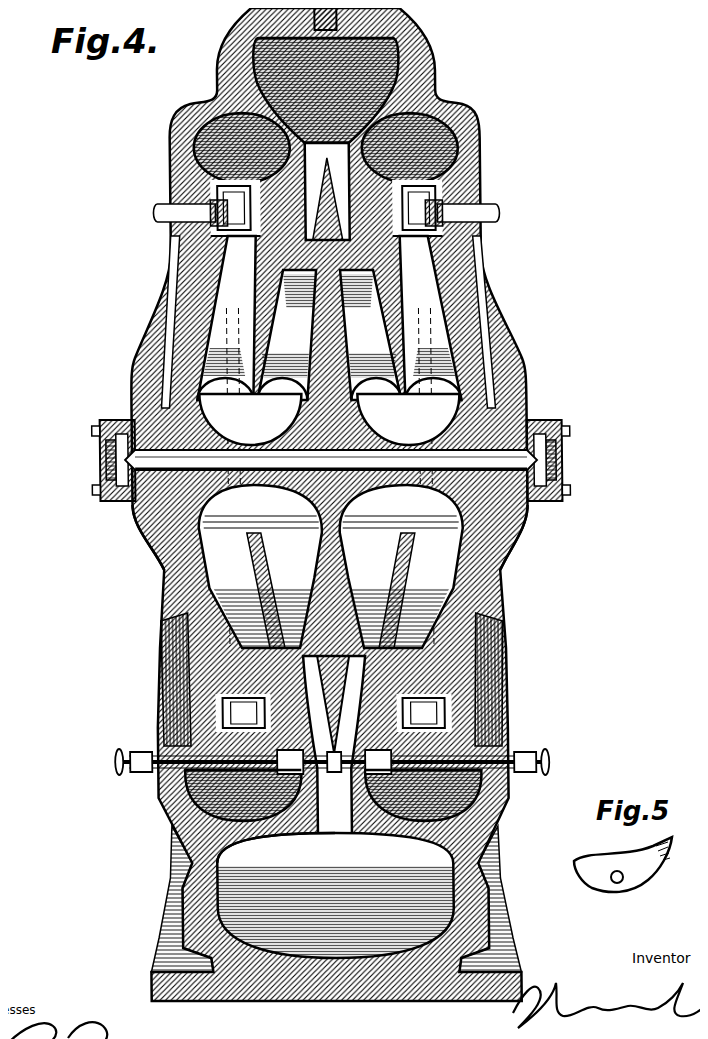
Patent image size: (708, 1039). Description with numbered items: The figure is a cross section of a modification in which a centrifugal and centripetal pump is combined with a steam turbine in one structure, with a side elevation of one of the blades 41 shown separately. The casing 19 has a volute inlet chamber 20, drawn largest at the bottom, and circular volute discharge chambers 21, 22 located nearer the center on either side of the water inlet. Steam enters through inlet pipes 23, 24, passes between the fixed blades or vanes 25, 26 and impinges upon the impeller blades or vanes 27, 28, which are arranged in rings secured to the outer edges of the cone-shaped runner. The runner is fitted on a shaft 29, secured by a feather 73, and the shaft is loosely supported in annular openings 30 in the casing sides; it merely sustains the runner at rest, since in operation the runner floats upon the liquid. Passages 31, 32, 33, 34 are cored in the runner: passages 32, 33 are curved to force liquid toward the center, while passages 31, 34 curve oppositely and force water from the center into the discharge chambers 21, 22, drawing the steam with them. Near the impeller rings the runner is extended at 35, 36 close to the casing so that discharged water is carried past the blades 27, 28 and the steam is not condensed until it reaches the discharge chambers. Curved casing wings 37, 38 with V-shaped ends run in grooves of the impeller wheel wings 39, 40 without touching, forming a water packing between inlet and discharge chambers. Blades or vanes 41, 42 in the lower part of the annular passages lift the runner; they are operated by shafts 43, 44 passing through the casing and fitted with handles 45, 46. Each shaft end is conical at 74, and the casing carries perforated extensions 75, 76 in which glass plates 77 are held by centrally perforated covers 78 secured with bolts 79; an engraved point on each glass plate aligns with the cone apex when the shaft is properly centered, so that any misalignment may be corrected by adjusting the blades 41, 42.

In FIG. 4, the casing 19 is at (503, 556).
In FIG. 4, the inlet chamber 20 is at (335, 895).
In FIG. 4, the volute discharge chamber 21 is at (212, 100).
In FIG. 4, the volute discharge chamber 22 is at (418, 128).
In FIG. 4, the inlet pipe 23 is at (200, 190).
In FIG. 4, the inlet pipe 24 is at (468, 205).
In FIG. 4, the fixed blade 25 is at (213, 210).
In FIG. 4, the fixed blade 26 is at (444, 192).
In FIG. 4, the impeller blade 27 is at (205, 182).
In FIG. 4, the impeller blade 28 is at (446, 165).
In FIG. 4, the shaft 29 is at (366, 440).
In FIG. 4, the annular opening 30 is at (148, 506).
In FIG. 4, the passage 31 is at (228, 442).
In FIG. 4, the passage 32 is at (286, 335).
In FIG. 4, the passage 33 is at (370, 335).
In FIG. 4, the passage 34 is at (432, 442).
In FIG. 4, the runner extension 35 is at (238, 226).
In FIG. 4, the runner extension 36 is at (437, 222).
In FIG. 4, the curved wing 37 is at (288, 835).
In FIG. 4, the curved wing 38 is at (326, 738).
In FIG. 4, the impeller wheel wing 39 is at (215, 702).
In FIG. 4, the impeller wheel wing 40 is at (430, 702).
In FIG. 4, the blade 41 is at (333, 783).
In FIG. 5, the blade 41 is at (650, 852).
In FIG. 4, the blade 42 is at (335, 746).
In FIG. 4, the shaft 43 is at (190, 740).
In FIG. 4, the shaft 44 is at (456, 740).
In FIG. 4, the handle 45 is at (104, 752).
In FIG. 4, the handle 46 is at (538, 752).
In FIG. 4, the feather 73 is at (252, 440).
In FIG. 4, the conical shaft end 74 is at (108, 455).
In FIG. 4, the perforated extension 75 is at (120, 482).
In FIG. 4, the perforated extension 76 is at (538, 412).
In FIG. 4, the glass plate 77 is at (100, 470).
In FIG. 4, the cover 78 is at (110, 414).
In FIG. 4, the bolt 79 is at (84, 422).